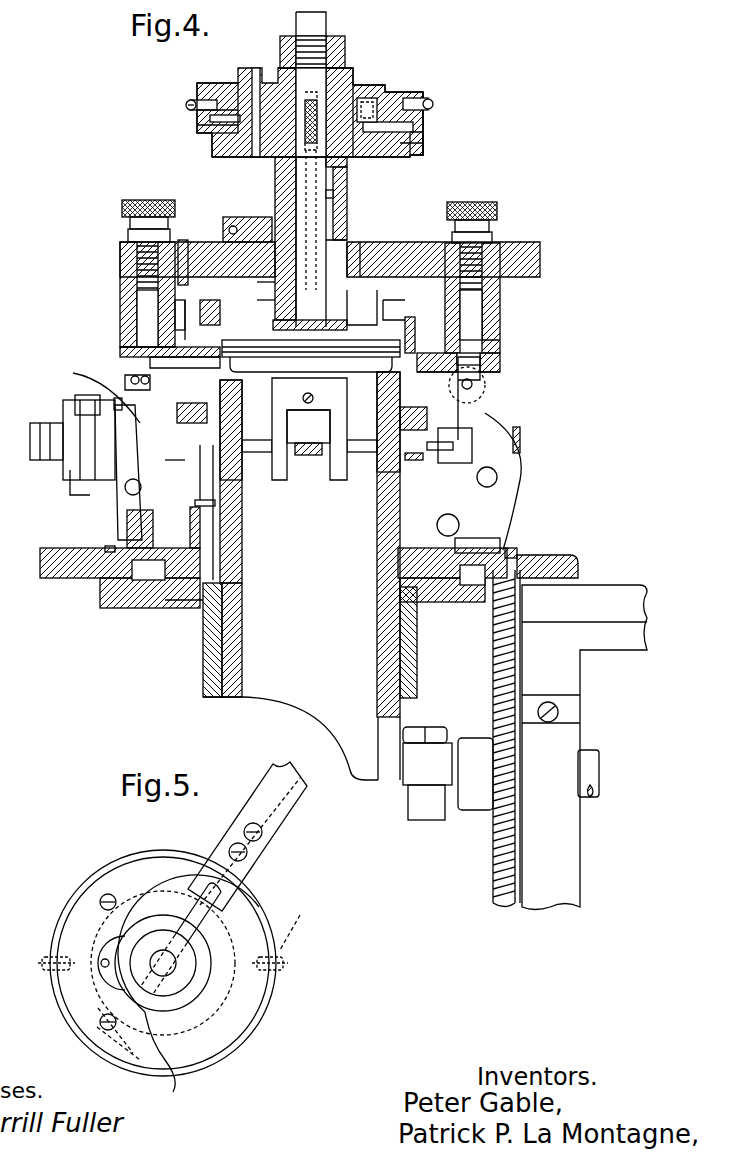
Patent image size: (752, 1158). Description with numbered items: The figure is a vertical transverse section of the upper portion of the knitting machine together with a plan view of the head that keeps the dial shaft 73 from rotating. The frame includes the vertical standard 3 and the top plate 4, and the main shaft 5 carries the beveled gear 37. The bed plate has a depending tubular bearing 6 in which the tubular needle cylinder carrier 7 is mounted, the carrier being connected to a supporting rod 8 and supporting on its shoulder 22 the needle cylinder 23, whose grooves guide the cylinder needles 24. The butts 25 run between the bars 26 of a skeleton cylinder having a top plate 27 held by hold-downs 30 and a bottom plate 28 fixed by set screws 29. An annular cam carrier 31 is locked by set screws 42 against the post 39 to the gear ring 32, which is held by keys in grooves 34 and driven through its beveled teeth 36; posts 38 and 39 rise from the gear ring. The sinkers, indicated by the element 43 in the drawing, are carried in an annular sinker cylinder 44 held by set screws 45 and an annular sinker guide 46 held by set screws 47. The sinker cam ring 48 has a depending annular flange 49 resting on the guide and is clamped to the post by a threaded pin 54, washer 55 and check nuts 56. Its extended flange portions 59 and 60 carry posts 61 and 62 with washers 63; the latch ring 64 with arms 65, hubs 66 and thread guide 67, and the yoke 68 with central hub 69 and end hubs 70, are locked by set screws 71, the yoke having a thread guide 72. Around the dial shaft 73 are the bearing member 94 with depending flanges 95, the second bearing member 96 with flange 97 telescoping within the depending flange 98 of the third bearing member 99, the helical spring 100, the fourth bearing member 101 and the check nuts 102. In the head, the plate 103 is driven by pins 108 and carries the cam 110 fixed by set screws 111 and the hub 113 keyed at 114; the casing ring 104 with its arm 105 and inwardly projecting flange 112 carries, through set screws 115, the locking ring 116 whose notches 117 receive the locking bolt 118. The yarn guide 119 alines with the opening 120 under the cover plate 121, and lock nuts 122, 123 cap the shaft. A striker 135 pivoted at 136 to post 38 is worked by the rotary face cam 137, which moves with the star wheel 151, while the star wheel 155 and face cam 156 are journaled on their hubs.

In FIG. 4, the vertical standard 3 is at (617, 640).
In FIG. 4, the top plate 4 is at (580, 564).
In FIG. 4, the main shaft 5 is at (600, 775).
In FIG. 4, the depending tubular bearing 6 is at (402, 648).
In FIG. 4, the tubular needle cylinder carrier 7 is at (236, 697).
In FIG. 4, the supporting rod 8 is at (404, 795).
In FIG. 4, the shoulder 22 is at (245, 590).
In FIG. 4, the needle cylinder 23 is at (245, 536).
In FIG. 4, the cylinder needles 24 is at (210, 490).
In FIG. 4, the butts 25 is at (200, 506).
In FIG. 4, the bars 26 is at (200, 476).
In FIG. 4, the top plate 27 is at (255, 452).
In FIG. 4, the bottom plate 28 is at (150, 606).
In FIG. 4, the set screws 29 is at (185, 610).
In FIG. 4, the hold-downs 30 is at (445, 463).
In FIG. 4, the annular cam carrier 31 is at (192, 540).
In FIG. 4, the gear ring 32 is at (110, 548).
In FIG. 4, the grooves 34 is at (520, 552).
In FIG. 4, the beveled teeth 36 is at (105, 600).
In FIG. 4, the beveled gear 37 is at (494, 681).
In FIG. 4, the post 38 is at (120, 500).
In FIG. 4, the post 39 is at (522, 495).
In FIG. 4, the set screws 42 is at (460, 525).
In FIG. 4, the plate 43 is at (232, 360).
In FIG. 4, the annular sinker cylinder 44 is at (355, 455).
In FIG. 4, the set screws 45 is at (253, 420).
In FIG. 4, the annular sinker guide 46 is at (80, 380).
In FIG. 4, the set screws 47 is at (195, 420).
In FIG. 4, the sinker cam ring 48 is at (500, 350).
In FIG. 4, the depending annular flange 49 is at (485, 386).
In FIG. 4, the screw threaded pin 54 is at (150, 360).
In FIG. 4, the washer 55 is at (133, 378).
In FIG. 4, the check nuts 56 is at (140, 388).
In FIG. 4, the extended flange portion 59 is at (125, 348).
In FIG. 4, the extended flange portion 60 is at (505, 366).
In FIG. 4, the post 61 is at (140, 300).
In FIG. 4, the post 62 is at (482, 306).
In FIG. 4, the washers 63 is at (130, 345).
In FIG. 4, the latch ring 64 is at (390, 312).
In FIG. 4, the arms 65 is at (190, 322).
In FIG. 4, the hubs 66 is at (183, 306).
In FIG. 4, the thread guide 67 is at (212, 306).
In FIG. 4, the yoke 68 is at (418, 240).
In FIG. 4, the central hub 69 is at (360, 296).
In FIG. 4, the end hubs 70 is at (120, 256).
In FIG. 4, the set screws 71 is at (150, 200).
In FIG. 4, the thread guide 72 is at (188, 240).
In FIG. 4, the dial shaft 73 is at (318, 24).
In FIG. 5, the dial shaft 73 is at (160, 950).
In FIG. 4, the bearing member 94 is at (276, 306).
In FIG. 4, the depending flanges 95 is at (305, 318).
In FIG. 4, the second bearing member 96 is at (276, 291).
In FIG. 4, the flange 97 is at (352, 252).
In FIG. 4, the depending flange 98 is at (370, 262).
In FIG. 4, the third bearing member 99 is at (348, 212).
In FIG. 4, the helical spring 100 is at (276, 212).
In FIG. 4, the fourth bearing member 101 is at (348, 186).
In FIG. 4, the check nuts 102 is at (348, 164).
In FIG. 4, the plate 103 is at (412, 150).
In FIG. 4, the casing ring 104 is at (428, 94).
In FIG. 5, the casing ring 104 is at (285, 958).
In FIG. 5, the arm 105 is at (283, 830).
In FIG. 4, the pins 108 is at (312, 206).
In FIG. 4, the cam 110 is at (200, 122).
In FIG. 5, the cam 110 is at (78, 906).
In FIG. 5, the set screws 111 is at (105, 894).
In FIG. 4, the inwardly projecting flange 112 is at (424, 140).
In FIG. 4, the hub 113 is at (352, 72).
In FIG. 4, the key 114 is at (356, 88).
In FIG. 4, the set screws 115 is at (200, 100).
In FIG. 5, the set screws 115 is at (300, 915).
In FIG. 4, the locking ring 116 is at (416, 88).
In FIG. 5, the locking ring 116 is at (240, 1008).
In FIG. 5, the slots or notches 117 is at (258, 892).
In FIG. 4, the locking bolt 118 is at (302, 95).
In FIG. 5, the locking bolt 118 is at (228, 902).
In FIG. 4, the yarn guide 119 is at (254, 68).
In FIG. 5, the yarn guide 119 is at (100, 968).
In FIG. 4, the opening 120 is at (246, 160).
In FIG. 4, the cover plate 121 is at (222, 85).
In FIG. 4, the lock nut 122 is at (346, 42).
In FIG. 4, the lock nut 123 is at (347, 56).
In FIG. 4, the striker 135 is at (55, 475).
In FIG. 4, the pivot 136 is at (125, 492).
In FIG. 4, the rotary face cam 137 is at (114, 400).
In FIG. 4, the star wheel 151 is at (63, 410).
In FIG. 4, the star wheel 155 is at (78, 400).
In FIG. 4, the face cam 156 is at (72, 490).